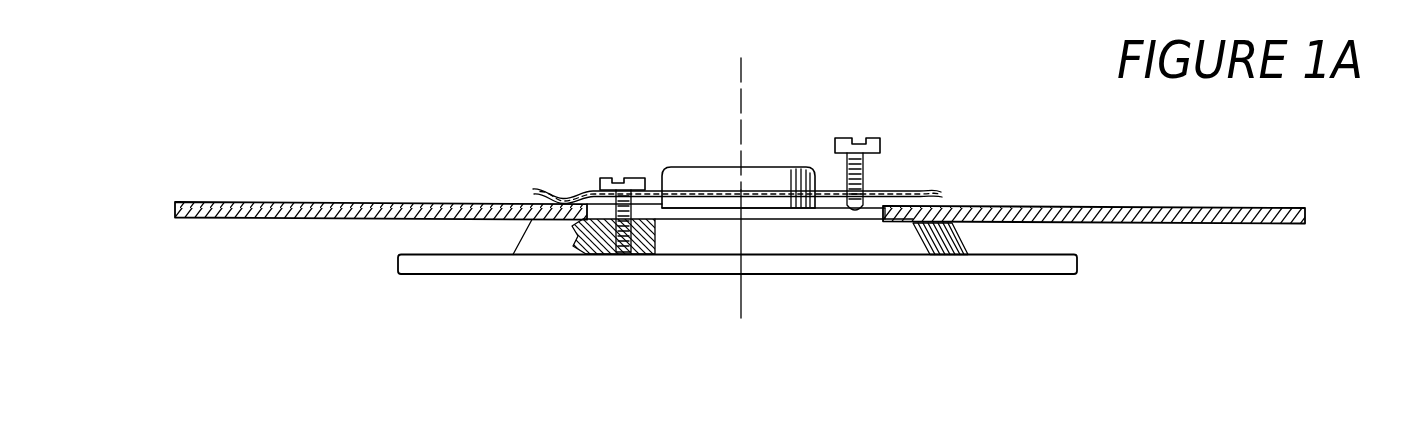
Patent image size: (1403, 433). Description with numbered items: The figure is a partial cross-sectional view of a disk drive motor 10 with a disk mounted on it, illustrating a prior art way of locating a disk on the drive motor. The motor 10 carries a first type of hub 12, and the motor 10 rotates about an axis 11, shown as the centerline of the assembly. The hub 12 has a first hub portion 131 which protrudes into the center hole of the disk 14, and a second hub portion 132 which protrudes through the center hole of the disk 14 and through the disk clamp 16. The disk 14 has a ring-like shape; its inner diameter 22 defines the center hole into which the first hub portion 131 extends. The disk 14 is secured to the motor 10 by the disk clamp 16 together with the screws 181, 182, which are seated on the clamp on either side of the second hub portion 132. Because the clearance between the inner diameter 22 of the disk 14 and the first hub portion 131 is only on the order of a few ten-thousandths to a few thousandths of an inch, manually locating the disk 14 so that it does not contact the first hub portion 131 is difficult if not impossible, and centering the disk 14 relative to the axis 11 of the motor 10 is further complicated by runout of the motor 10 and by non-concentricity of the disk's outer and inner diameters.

The disk drive motor 10 is at (895, 240).
The axis 11 is at (743, 83).
The hub 12 is at (756, 195).
The first hub portion 131 is at (716, 212).
The second hub portion 132 is at (714, 170).
The disk 14 is at (1066, 206).
The disk clamp 16 is at (913, 197).
The screw 181 is at (612, 183).
The screw 182 is at (877, 140).
The inner diameter 22 is at (883, 218).